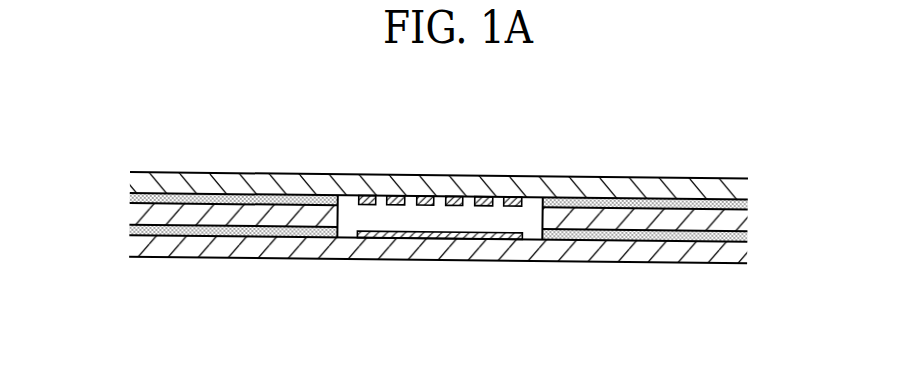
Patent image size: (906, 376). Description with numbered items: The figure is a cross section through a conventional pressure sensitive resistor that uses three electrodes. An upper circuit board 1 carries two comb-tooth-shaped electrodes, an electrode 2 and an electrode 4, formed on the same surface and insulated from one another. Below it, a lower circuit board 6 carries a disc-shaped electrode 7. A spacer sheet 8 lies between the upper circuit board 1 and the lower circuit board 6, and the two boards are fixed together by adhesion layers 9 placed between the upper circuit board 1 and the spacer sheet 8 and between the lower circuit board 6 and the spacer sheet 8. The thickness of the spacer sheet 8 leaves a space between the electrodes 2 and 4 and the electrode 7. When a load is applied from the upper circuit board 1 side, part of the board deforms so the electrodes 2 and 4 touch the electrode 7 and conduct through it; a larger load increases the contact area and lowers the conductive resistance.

The upper circuit board 1 is at (142, 190).
The electrode 2 is at (392, 195).
The electrode 4 is at (363, 195).
The lower circuit board 6 is at (138, 244).
The electrode 7 is at (380, 238).
The spacer sheet 8 is at (138, 208).
The adhesion layers 9 is at (210, 198).